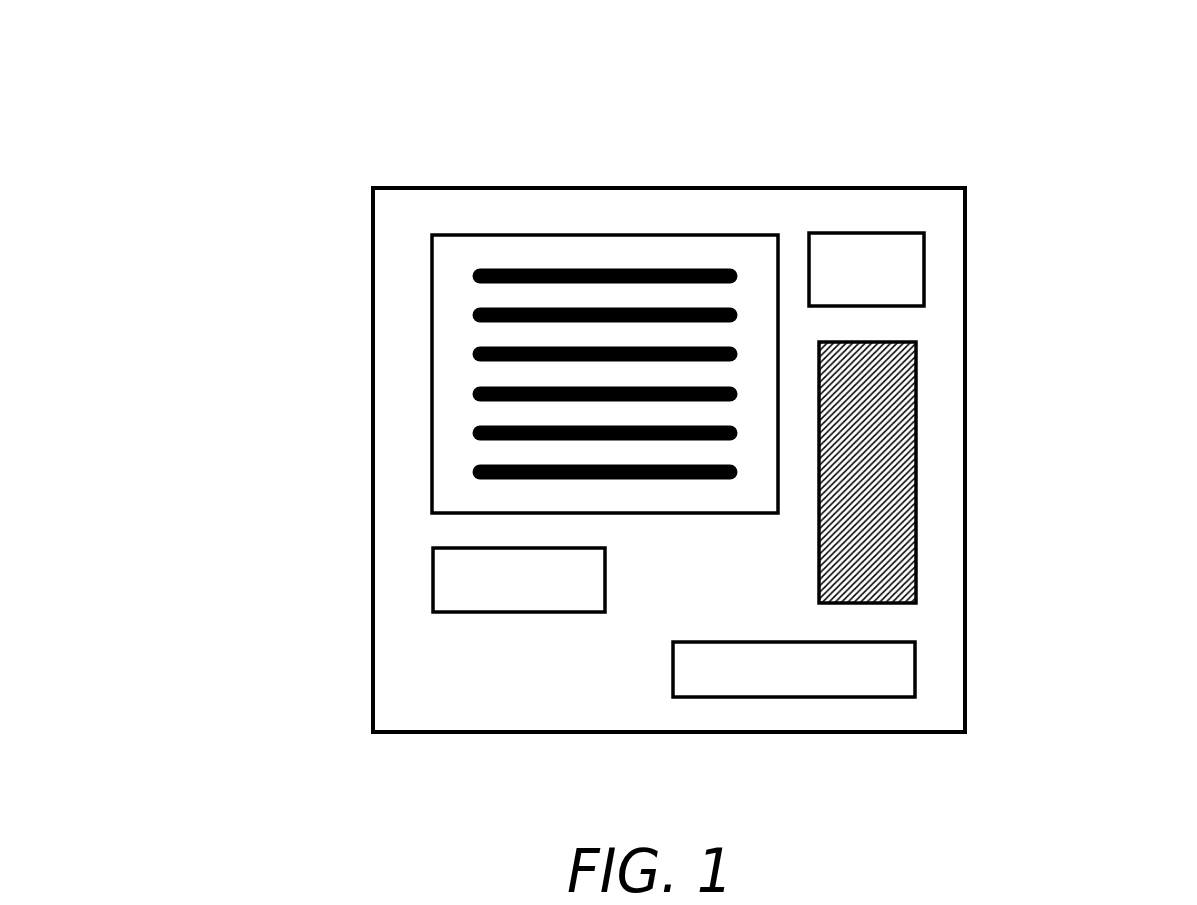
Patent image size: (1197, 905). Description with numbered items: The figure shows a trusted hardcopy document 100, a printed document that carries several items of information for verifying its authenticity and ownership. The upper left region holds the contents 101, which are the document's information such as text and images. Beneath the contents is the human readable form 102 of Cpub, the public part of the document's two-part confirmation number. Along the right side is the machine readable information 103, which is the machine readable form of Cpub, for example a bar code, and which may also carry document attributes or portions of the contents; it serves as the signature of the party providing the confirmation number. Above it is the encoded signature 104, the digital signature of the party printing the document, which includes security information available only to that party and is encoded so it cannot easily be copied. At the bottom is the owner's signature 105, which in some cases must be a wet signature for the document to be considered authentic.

The trusted hardcopy document 100 is at (700, 39).
The contents 101 is at (496, 235).
The human readable form of Cpub 102 is at (345, 614).
The machine readable information 103 is at (916, 447).
The encoded signature 104 is at (892, 284).
The owner's signature 105 is at (820, 684).